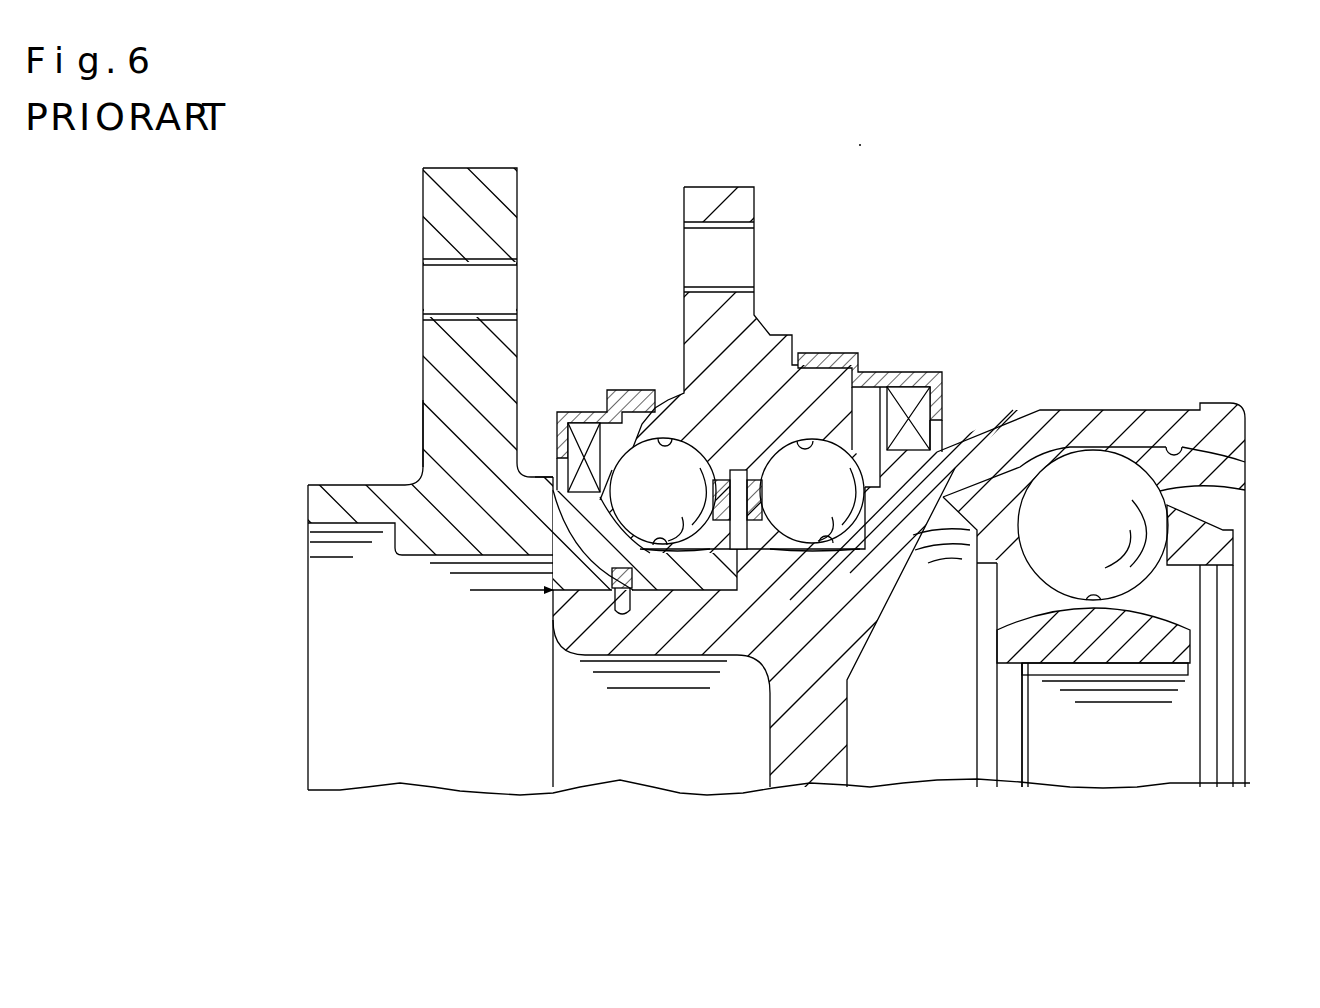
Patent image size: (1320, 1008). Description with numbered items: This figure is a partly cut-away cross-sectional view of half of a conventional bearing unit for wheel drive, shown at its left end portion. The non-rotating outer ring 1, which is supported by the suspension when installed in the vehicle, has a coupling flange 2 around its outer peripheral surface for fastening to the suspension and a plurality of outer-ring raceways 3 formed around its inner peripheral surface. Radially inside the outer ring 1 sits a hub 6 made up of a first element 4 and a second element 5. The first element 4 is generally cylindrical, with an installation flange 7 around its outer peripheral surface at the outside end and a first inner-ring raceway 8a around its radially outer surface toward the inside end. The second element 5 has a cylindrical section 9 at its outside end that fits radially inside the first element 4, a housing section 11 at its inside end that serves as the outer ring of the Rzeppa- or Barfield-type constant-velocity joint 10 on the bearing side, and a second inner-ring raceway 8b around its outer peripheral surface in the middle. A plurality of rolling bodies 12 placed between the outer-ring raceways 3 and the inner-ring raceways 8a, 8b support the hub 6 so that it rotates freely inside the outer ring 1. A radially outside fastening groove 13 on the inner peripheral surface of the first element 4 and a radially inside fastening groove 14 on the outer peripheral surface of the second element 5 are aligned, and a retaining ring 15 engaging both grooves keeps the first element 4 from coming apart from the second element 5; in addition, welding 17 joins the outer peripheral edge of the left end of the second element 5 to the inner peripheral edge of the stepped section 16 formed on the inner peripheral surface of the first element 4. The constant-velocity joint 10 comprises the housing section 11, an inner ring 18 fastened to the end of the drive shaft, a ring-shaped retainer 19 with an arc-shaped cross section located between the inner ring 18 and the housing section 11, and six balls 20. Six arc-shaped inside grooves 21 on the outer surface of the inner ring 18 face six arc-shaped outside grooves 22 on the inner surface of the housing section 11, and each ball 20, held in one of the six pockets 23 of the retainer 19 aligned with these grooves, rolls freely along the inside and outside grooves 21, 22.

The outer ring 1 is at (768, 338).
The coupling flange 2 is at (688, 213).
The outer-ring raceways 3 is at (640, 460).
The first element 4 is at (370, 500).
The second element 5 is at (1075, 420).
The hub 6 is at (412, 420).
The installation flange 7 is at (432, 200).
The first inner-ring raceway 8a is at (650, 544).
The second inner-ring raceway 8b is at (822, 546).
The cylindrical section 9 is at (573, 645).
The constant-velocity joint 10 is at (1134, 706).
The housing section 11 is at (1140, 412).
The rolling bodies 12 is at (625, 410).
The radially outside fastening groove 13 is at (557, 482).
The radially inside fastening groove 14 is at (620, 618).
The retaining ring 15 is at (633, 618).
The stepped section 16 is at (553, 568).
The welding 17 is at (553, 590).
The inner ring 18 is at (1178, 628).
The retainer 19 is at (1222, 552).
The balls 20 is at (1137, 500).
The inside grooves 21 is at (1100, 597).
The outside grooves 22 is at (1176, 443).
The pockets 23 is at (1020, 525).